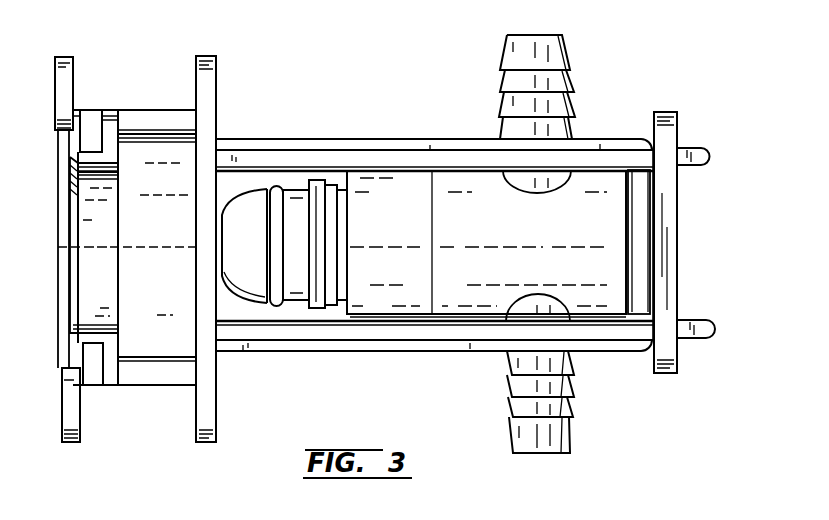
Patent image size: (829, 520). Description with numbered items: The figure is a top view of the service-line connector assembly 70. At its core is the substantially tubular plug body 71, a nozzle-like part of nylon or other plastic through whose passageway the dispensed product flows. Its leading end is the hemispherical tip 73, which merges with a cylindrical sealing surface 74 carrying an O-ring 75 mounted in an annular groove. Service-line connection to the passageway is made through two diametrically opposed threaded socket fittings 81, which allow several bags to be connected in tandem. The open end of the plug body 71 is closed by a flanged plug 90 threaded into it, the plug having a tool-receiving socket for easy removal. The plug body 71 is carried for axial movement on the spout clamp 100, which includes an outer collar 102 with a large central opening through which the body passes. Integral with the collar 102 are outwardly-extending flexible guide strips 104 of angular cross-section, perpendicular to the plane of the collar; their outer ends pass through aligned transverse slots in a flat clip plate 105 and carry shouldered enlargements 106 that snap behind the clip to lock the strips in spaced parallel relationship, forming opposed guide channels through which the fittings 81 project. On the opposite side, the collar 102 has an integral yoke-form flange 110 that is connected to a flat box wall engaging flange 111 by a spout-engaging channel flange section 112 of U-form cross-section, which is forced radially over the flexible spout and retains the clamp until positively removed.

The service-line connector assembly 70 is at (430, 135).
The plug body 71 is at (381, 273).
The tip 73 is at (252, 208).
The cylindrical sealing surface 74 is at (299, 292).
The O-ring 75 is at (277, 188).
The threaded socket fittings 81 is at (553, 58).
The flanged plug 90 is at (640, 228).
The spout clamp 100 is at (78, 55).
The collar 102 is at (208, 57).
The guide strips 104 is at (345, 168).
The clip plate 105 is at (668, 135).
The shouldered enlargements 106 is at (700, 158).
The flange 110 is at (153, 337).
The box wall engaging flange 111 is at (73, 442).
The spout-engaging channel flange section 112 is at (93, 347).